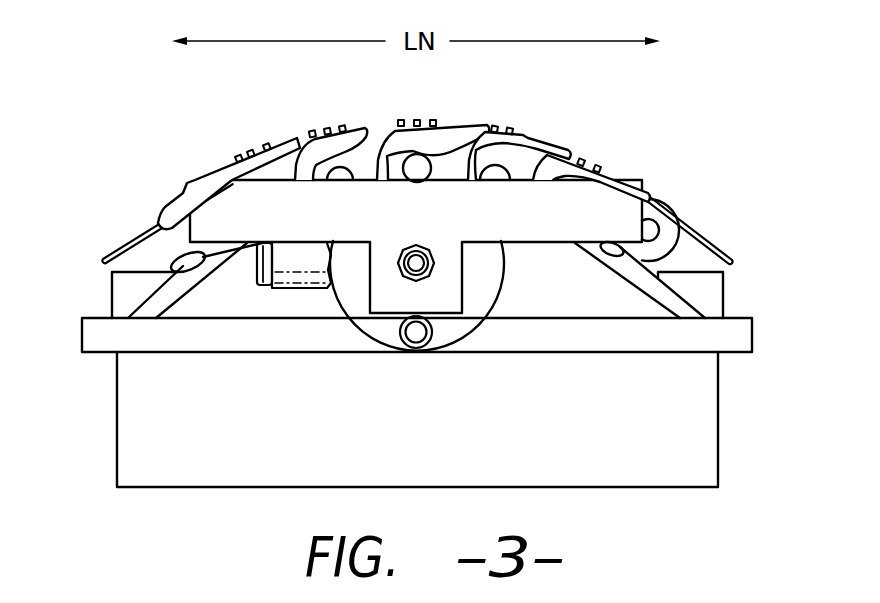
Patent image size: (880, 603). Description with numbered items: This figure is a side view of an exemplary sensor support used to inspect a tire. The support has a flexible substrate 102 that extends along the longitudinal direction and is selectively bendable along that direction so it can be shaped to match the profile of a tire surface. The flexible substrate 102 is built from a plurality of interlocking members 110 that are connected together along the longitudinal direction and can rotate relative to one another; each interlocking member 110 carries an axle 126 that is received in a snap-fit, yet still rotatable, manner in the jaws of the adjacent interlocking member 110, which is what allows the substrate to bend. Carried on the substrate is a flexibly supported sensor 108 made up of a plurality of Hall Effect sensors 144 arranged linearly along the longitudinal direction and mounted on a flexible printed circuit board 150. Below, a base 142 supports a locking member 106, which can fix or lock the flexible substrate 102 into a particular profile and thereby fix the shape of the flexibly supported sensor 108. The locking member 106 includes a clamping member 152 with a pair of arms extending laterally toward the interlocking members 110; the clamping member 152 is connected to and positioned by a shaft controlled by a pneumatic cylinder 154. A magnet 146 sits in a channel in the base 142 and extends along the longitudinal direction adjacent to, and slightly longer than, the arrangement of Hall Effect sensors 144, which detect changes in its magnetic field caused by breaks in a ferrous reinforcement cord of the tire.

The flexible substrate 102 is at (436, 149).
The locking member 106 is at (493, 325).
The flexibly supported sensor 108 is at (700, 228).
The interlocking members 110 is at (360, 143).
The axle 126 is at (418, 167).
The base 142 is at (735, 335).
The Hall Effect sensors 144 is at (253, 152).
The magnet 146 is at (123, 292).
The flexible printed circuit board 150 is at (137, 227).
The clamping member 152 is at (243, 232).
The pneumatic cylinder 154 is at (377, 325).